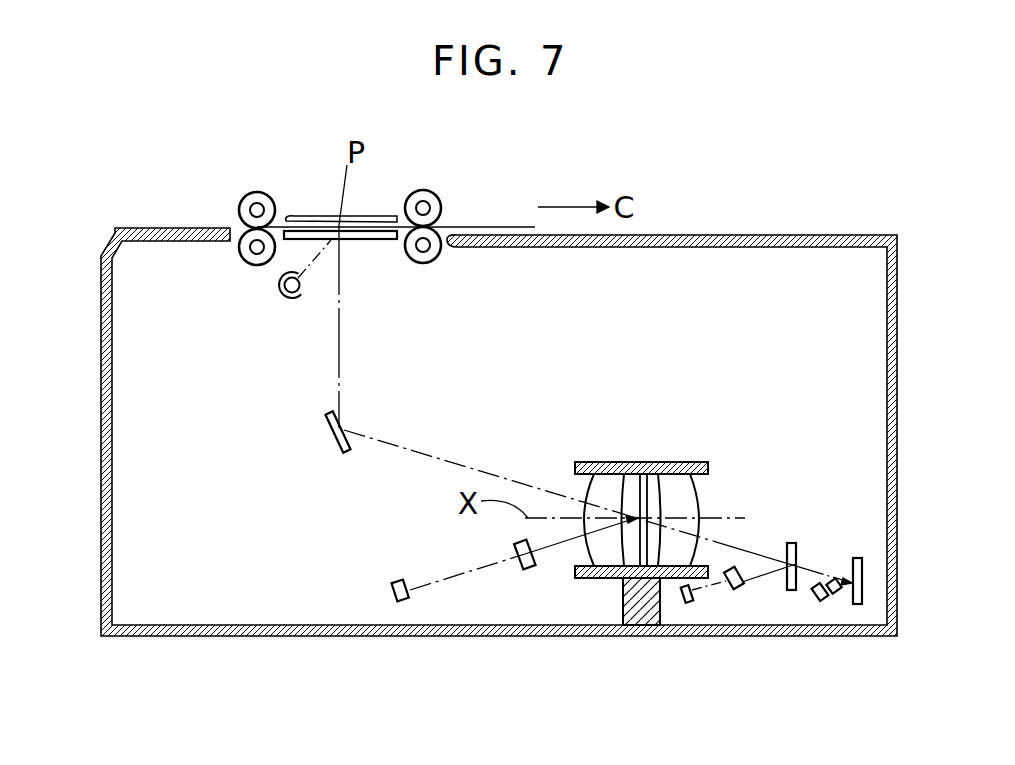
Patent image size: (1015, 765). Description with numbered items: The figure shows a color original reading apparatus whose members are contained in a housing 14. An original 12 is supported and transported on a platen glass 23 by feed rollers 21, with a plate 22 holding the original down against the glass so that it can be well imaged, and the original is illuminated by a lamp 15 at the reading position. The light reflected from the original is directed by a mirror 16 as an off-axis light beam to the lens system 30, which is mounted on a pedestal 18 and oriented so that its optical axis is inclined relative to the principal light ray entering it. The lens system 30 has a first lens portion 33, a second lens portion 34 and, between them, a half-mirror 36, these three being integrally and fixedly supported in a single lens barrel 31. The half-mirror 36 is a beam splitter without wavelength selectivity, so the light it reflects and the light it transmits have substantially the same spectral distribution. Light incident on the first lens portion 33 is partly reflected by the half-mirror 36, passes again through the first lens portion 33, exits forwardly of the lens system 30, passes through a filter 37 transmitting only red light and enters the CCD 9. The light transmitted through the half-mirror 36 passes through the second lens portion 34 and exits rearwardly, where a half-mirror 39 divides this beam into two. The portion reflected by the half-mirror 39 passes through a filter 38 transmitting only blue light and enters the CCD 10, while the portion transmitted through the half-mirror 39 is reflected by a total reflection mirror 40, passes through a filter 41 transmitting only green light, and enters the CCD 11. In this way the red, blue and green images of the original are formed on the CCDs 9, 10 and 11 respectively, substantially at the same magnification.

The CCD 9 is at (403, 602).
The CCD 10 is at (683, 605).
The CCD 11 is at (816, 603).
The original 12 is at (507, 225).
The housing 14 is at (203, 636).
The lamp 15 is at (278, 293).
The mirror 16 is at (326, 432).
The pedestal 18 is at (622, 588).
The feed rollers 21 is at (250, 193).
The plate 22 is at (322, 215).
The platen glass 23 is at (362, 240).
The lens system 30 is at (678, 552).
The lens barrel 31 is at (603, 460).
The first lens portion 33 is at (605, 550).
The second lens portion 34 is at (687, 503).
The half-mirror 36 is at (657, 505).
The filter 37 is at (531, 571).
The filter 38 is at (733, 590).
The half-mirror 39 is at (793, 543).
The total reflection mirror 40 is at (863, 570).
The filter 41 is at (838, 597).